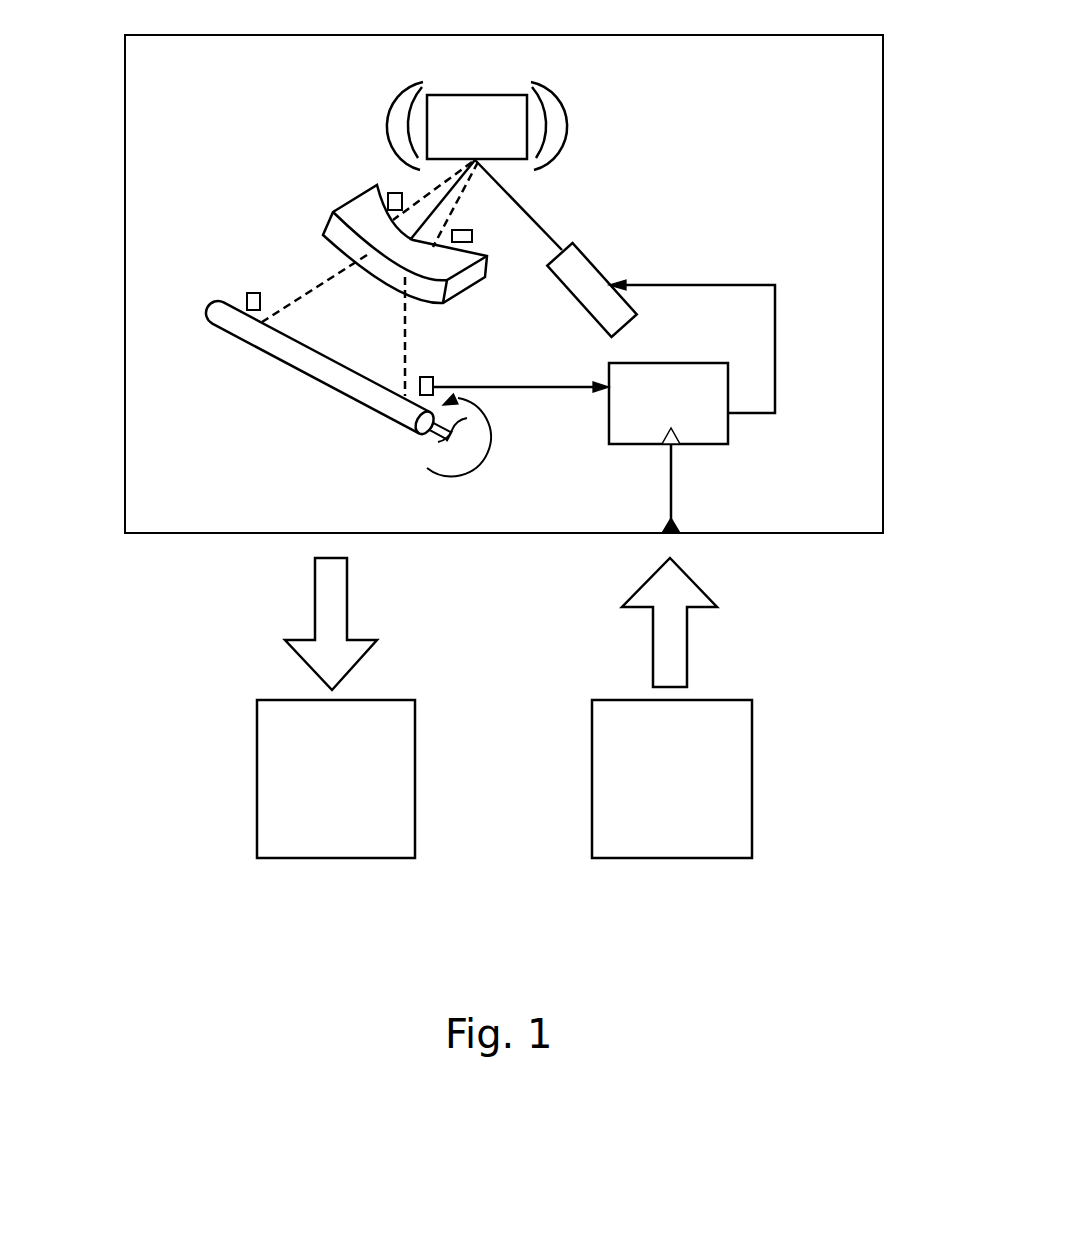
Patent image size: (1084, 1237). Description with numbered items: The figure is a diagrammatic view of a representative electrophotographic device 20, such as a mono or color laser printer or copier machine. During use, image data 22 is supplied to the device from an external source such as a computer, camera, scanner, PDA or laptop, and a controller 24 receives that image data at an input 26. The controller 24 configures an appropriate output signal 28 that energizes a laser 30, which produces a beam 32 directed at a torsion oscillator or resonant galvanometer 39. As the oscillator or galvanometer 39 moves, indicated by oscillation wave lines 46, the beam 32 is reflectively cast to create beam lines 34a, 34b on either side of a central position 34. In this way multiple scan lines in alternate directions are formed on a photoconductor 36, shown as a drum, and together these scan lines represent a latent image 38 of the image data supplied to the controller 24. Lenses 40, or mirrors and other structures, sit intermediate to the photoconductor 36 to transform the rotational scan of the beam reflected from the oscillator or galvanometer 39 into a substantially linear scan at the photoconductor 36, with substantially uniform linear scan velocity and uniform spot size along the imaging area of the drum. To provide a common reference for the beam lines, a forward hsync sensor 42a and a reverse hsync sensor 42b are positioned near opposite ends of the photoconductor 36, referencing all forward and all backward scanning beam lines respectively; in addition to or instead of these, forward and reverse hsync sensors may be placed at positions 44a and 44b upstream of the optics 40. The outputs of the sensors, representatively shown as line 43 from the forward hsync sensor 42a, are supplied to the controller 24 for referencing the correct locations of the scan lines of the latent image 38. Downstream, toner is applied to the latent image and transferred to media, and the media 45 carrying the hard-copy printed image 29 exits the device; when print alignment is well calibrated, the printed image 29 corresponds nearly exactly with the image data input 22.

The EP device 20 is at (724, 36).
The image data 22 is at (735, 773).
The controller 24 is at (608, 368).
The input 26 is at (668, 447).
The output signal 28 is at (777, 347).
The printed image 29 is at (275, 778).
The laser 30 is at (575, 272).
The beam 32 is at (543, 227).
The central position 34 is at (473, 237).
The beam line 34a is at (450, 203).
The beam line 34b is at (440, 188).
The photoconductor 36 is at (290, 373).
The latent image 38 is at (358, 407).
The torsion oscillator or resonant galvanometer 39 is at (458, 95).
The lenses 40 is at (358, 222).
The forward hsync sensor 42a is at (428, 378).
The reverse hsync sensor 42b is at (247, 295).
The line 43 is at (515, 383).
The forward hsync sensor position 44a is at (473, 241).
The reverse hsync sensor position 44b is at (388, 197).
The media 45 is at (380, 698).
The oscillation wave lines 46 is at (397, 112).